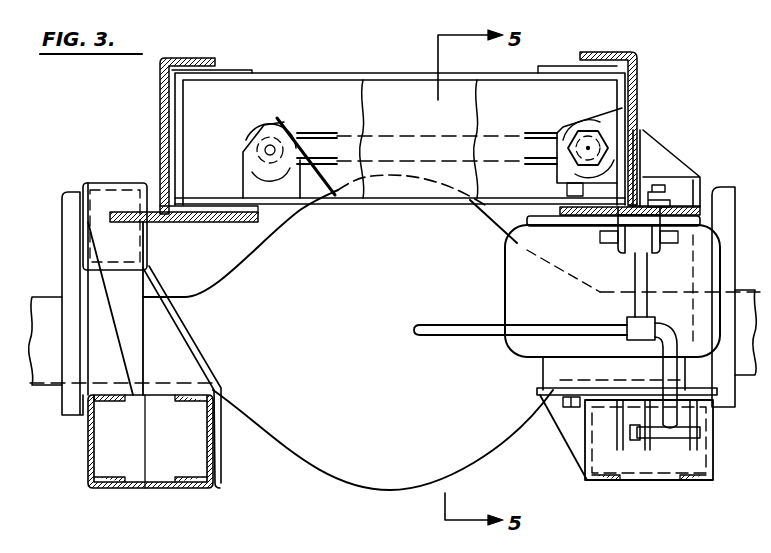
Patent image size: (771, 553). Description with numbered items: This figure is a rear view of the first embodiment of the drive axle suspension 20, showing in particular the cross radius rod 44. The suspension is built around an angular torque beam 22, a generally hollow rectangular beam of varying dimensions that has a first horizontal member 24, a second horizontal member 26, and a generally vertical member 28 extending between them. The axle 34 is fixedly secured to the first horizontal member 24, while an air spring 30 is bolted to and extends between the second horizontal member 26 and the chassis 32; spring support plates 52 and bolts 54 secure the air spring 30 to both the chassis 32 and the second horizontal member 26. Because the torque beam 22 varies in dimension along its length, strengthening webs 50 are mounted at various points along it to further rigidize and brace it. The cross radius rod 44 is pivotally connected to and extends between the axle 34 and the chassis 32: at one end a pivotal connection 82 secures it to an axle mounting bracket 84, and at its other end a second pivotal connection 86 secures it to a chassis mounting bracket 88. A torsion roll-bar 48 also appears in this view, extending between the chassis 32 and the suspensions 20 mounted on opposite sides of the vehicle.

The drive axle suspension 20 is at (286, 473).
The angular torque beam 22 is at (62, 244).
The first horizontal member 24 is at (90, 180).
The second horizontal member 26 is at (110, 490).
The generally vertical member 28 is at (133, 345).
The air spring 30 is at (510, 276).
The chassis 32 is at (160, 94).
The axle 34 is at (42, 383).
The cross radius rod 44 is at (349, 131).
The torsion roll-bar 48 is at (422, 337).
The strengthening webs 50 is at (575, 443).
The spring support plates 52 is at (535, 391).
The bolts 54 is at (658, 198).
The pivotal connection 82 is at (258, 126).
The axle mounting bracket 84 is at (241, 179).
The second pivotal connection 86 is at (604, 127).
The chassis mounting bracket 88 is at (602, 112).